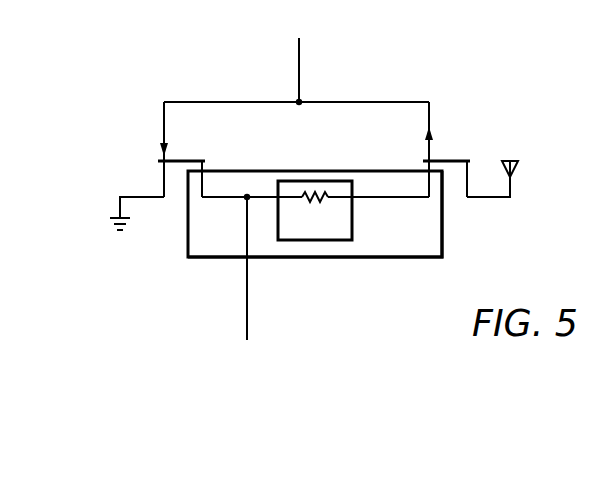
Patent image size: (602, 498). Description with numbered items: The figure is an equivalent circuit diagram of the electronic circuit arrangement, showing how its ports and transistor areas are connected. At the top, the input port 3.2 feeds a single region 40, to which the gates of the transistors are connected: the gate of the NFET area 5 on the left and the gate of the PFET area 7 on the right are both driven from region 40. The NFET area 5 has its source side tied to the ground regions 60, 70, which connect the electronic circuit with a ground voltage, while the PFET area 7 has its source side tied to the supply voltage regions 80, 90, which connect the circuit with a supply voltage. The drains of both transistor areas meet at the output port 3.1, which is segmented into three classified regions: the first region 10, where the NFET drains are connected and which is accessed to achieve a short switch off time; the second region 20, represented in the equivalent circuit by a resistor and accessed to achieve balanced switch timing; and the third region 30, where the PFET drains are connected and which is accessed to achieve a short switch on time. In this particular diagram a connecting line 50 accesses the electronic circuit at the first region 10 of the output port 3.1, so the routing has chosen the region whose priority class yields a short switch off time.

The NFET area 5 is at (148, 90).
The PFET area 7 is at (455, 113).
The first region 10 is at (220, 257).
The second region 20 is at (353, 212).
The third region 30 is at (420, 257).
The region of the input port 40 is at (297, 100).
The connecting line 50 is at (247, 320).
The first ground region 60 is at (90, 227).
The second ground region 70 is at (108, 228).
The first supply voltage region 80 is at (513, 151).
The second supply voltage region 90 is at (514, 158).
The output port 3.1 is at (483, 225).
The input port 3.2 is at (364, 70).